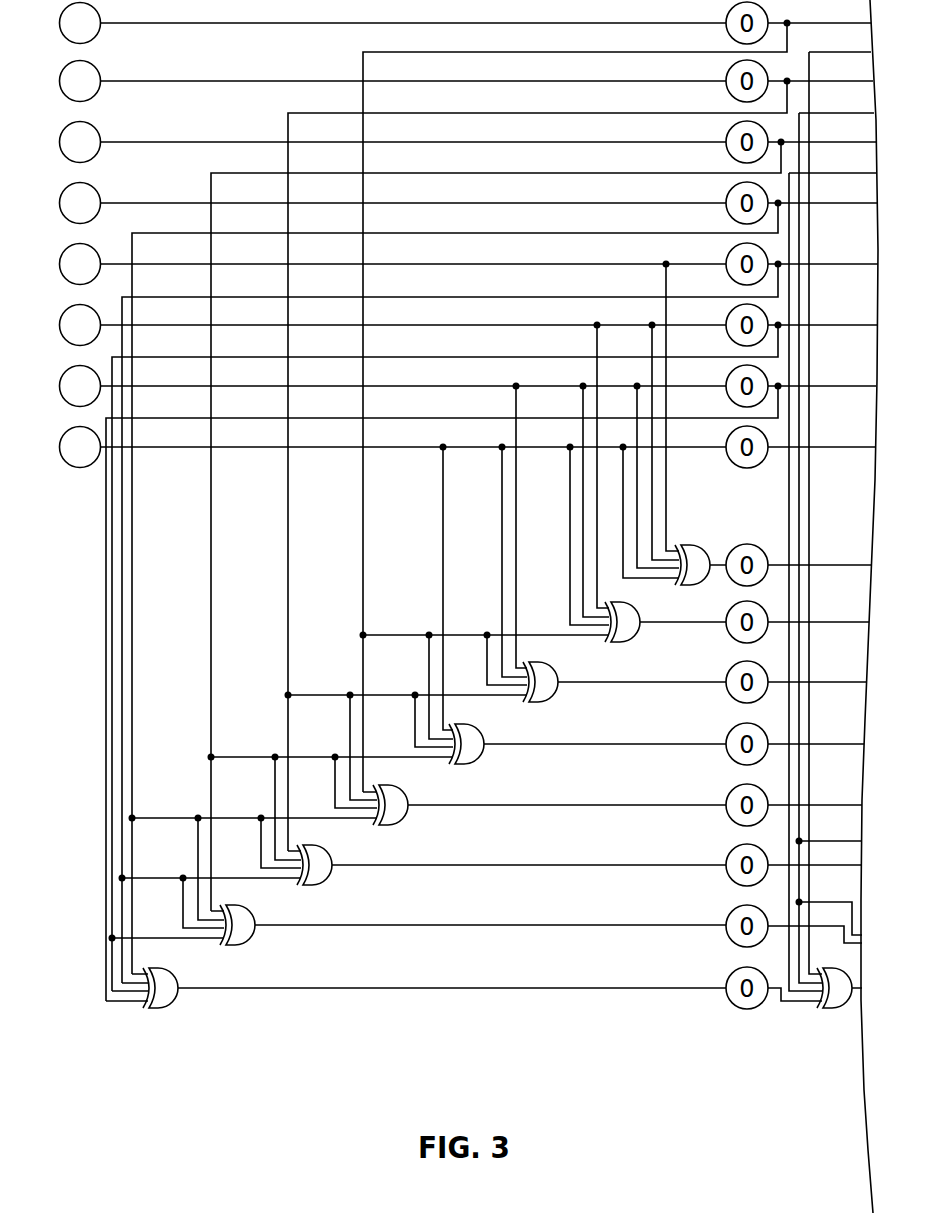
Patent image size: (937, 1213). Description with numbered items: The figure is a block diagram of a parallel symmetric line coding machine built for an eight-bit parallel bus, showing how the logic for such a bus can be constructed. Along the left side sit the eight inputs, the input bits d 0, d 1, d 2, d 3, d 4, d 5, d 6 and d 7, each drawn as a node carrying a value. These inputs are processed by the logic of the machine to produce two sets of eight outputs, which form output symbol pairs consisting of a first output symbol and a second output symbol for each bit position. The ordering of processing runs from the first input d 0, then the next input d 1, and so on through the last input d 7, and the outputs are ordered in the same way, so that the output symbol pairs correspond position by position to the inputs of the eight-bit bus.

The input d7 7 is at (65, 23).
The input d6 6 is at (65, 81).
The input d5 5 is at (65, 142).
The input d4 4 is at (65, 203).
The input d3 3 is at (65, 264).
The input d2 2 is at (65, 325).
The input d1 1 is at (65, 386).
The input d0 0 is at (65, 447).